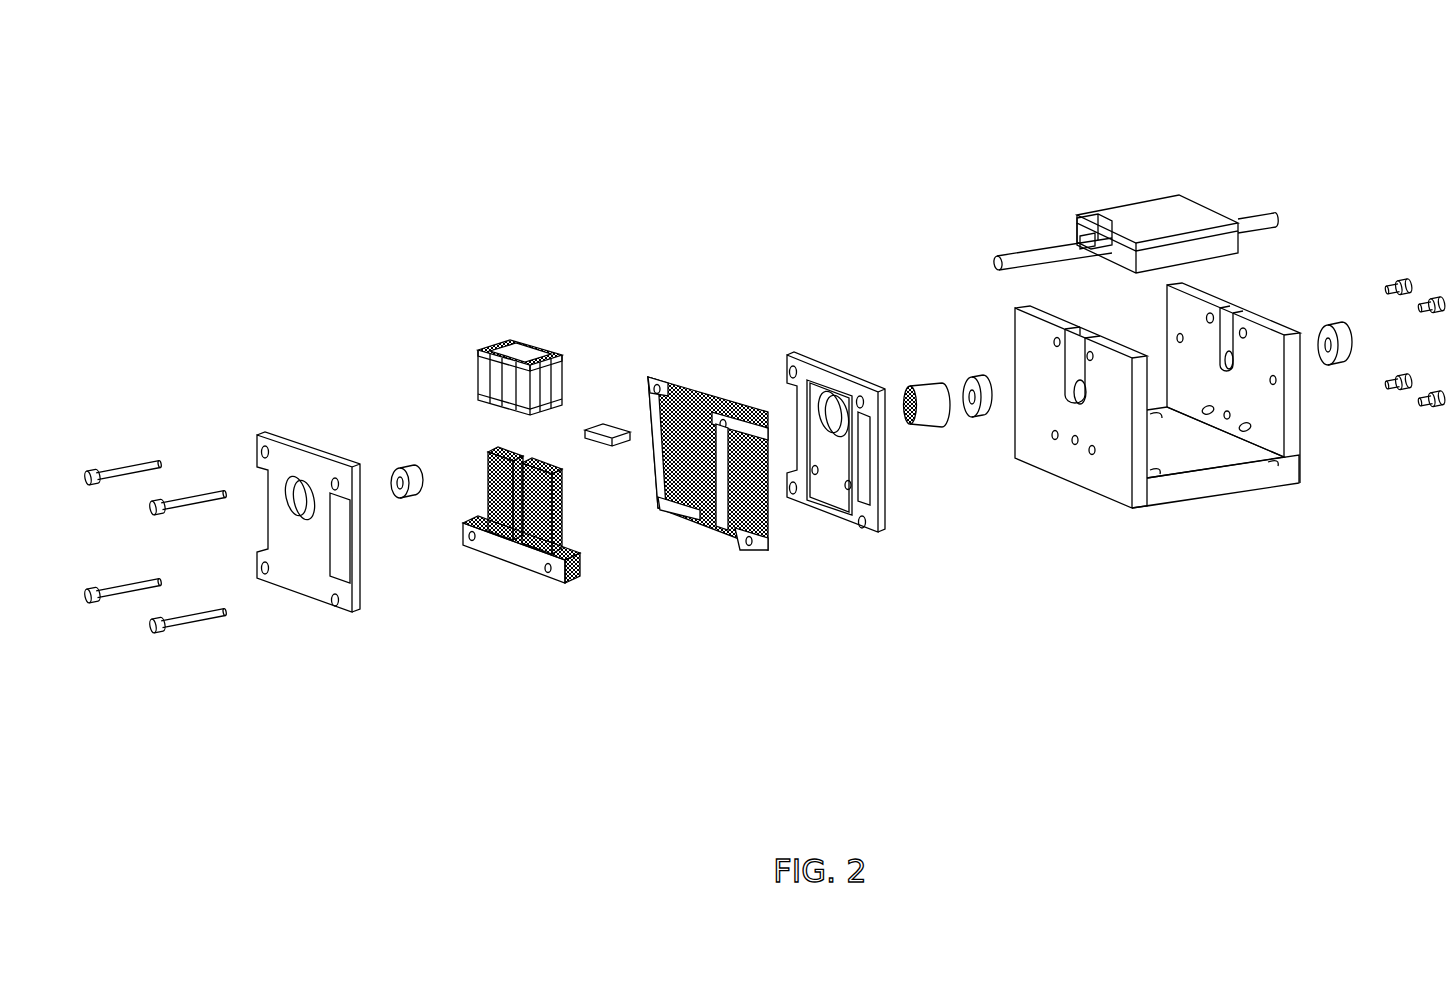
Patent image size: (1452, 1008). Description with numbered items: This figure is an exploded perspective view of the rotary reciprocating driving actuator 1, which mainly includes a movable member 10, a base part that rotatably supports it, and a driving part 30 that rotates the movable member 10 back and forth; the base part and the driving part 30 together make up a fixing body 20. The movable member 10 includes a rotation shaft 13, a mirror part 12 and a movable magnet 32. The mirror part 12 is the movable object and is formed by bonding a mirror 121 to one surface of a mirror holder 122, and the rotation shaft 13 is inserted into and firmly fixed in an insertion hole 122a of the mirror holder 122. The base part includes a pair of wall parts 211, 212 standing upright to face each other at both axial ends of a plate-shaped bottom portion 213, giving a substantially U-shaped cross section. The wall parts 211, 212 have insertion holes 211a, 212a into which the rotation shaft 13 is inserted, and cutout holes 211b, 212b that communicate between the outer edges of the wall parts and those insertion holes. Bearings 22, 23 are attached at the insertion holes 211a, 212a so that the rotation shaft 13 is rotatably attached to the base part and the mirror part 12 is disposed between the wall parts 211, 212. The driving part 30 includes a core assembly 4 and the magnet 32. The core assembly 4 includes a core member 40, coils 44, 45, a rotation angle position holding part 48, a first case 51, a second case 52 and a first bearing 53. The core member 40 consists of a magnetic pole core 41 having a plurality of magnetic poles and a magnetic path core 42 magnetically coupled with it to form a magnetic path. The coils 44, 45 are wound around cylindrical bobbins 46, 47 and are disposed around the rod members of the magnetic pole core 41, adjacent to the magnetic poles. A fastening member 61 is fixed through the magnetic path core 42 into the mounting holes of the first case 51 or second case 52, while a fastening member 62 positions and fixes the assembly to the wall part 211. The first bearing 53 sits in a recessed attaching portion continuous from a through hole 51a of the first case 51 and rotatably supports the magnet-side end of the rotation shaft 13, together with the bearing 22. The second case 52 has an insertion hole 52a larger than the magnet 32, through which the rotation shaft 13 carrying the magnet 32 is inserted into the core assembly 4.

The rotary reciprocating driving actuator 1 is at (756, 62).
The core assembly 4 is at (364, 275).
The movable member 10 is at (1240, 190).
The mirror part 12 is at (1118, 190).
The mirror 121 is at (1170, 210).
The mirror holder 122 is at (1087, 237).
The insertion hole 122a is at (1080, 250).
The rotation shaft 13 is at (1025, 253).
The fixing body 20 is at (1226, 509).
The wall part 211 is at (1073, 342).
The insertion hole 211a is at (1073, 398).
The cutout hole 211b is at (1070, 340).
The wall part 212 is at (1257, 352).
The insertion hole 212a is at (1232, 360).
The cutout hole 212b is at (1228, 322).
The bottom portion 213 is at (1180, 487).
The bearing 22 is at (980, 415).
The bearing 23 is at (1332, 367).
The driving part 30 is at (253, 757).
The movable magnet 32 is at (930, 420).
The core member 40 is at (468, 650).
The magnetic pole core 41 is at (493, 589).
The magnetic path core 42 is at (736, 587).
The coil 44 is at (490, 380).
The coil 45 is at (513, 397).
The bobbin 46 is at (480, 346).
The bobbin 47 is at (540, 350).
The rotation angle position holding part 48 is at (600, 425).
The first case 51 is at (305, 473).
The through hole 51a is at (310, 508).
The second case 52 is at (833, 518).
The insertion hole 52a is at (836, 425).
The first bearing 53 is at (404, 470).
The fastening member 61 is at (153, 441).
The fastening member 62 is at (1424, 264).